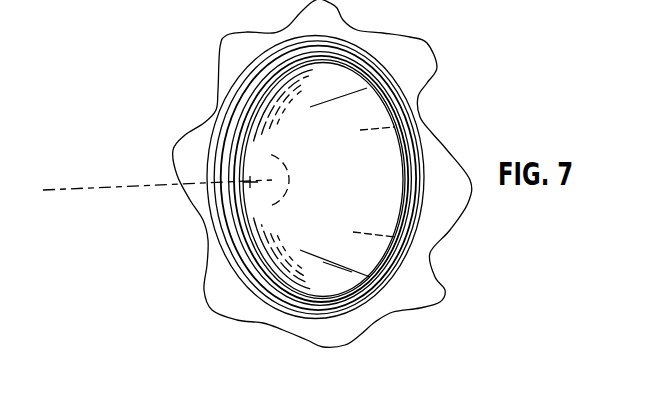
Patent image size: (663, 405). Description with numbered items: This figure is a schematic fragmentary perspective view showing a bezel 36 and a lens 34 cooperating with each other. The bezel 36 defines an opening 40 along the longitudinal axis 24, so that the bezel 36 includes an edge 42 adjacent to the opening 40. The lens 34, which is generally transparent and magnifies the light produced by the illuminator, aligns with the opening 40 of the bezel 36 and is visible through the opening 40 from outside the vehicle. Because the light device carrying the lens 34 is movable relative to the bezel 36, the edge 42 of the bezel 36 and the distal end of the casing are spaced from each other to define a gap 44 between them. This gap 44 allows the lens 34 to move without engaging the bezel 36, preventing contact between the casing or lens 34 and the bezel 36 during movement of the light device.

The longitudinal axis 24 is at (106, 187).
The lens 34 is at (258, 91).
The bezel 36 is at (420, 53).
The opening 40 is at (227, 108).
The edge 42 is at (224, 216).
The gap 44 is at (272, 165).